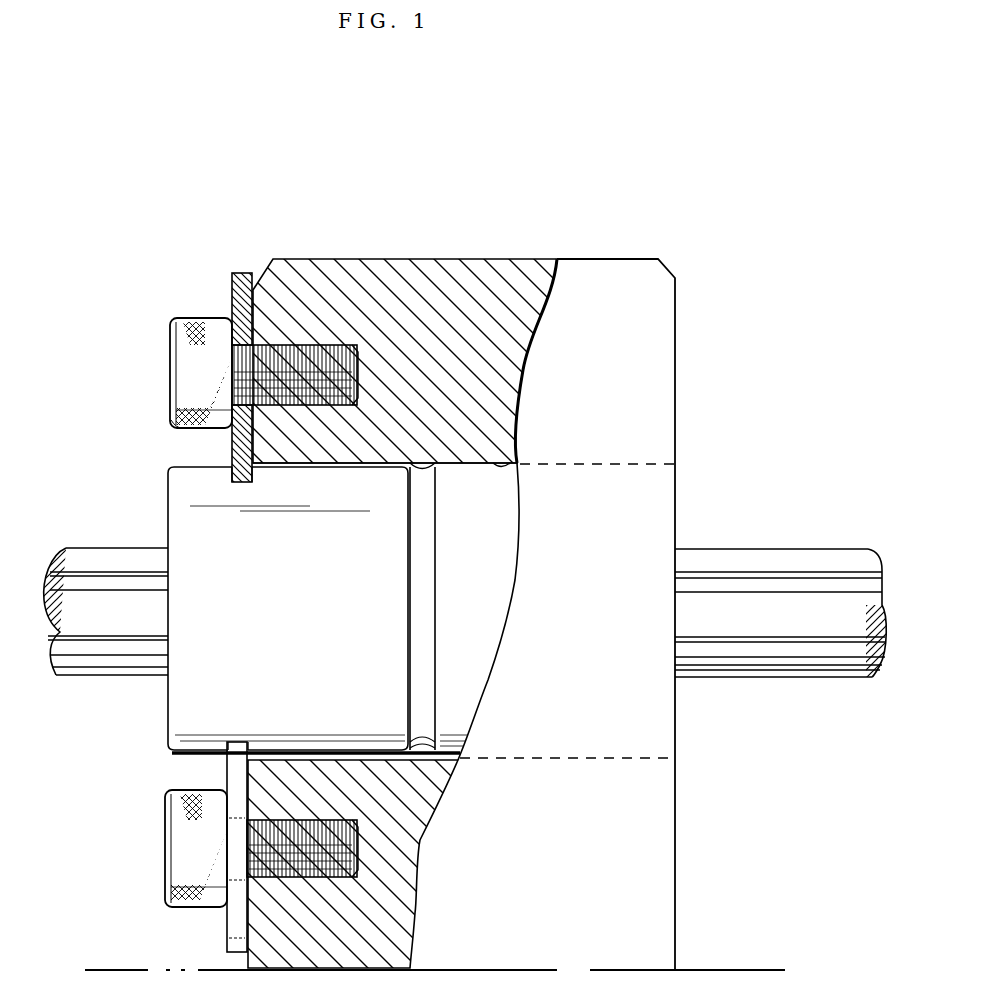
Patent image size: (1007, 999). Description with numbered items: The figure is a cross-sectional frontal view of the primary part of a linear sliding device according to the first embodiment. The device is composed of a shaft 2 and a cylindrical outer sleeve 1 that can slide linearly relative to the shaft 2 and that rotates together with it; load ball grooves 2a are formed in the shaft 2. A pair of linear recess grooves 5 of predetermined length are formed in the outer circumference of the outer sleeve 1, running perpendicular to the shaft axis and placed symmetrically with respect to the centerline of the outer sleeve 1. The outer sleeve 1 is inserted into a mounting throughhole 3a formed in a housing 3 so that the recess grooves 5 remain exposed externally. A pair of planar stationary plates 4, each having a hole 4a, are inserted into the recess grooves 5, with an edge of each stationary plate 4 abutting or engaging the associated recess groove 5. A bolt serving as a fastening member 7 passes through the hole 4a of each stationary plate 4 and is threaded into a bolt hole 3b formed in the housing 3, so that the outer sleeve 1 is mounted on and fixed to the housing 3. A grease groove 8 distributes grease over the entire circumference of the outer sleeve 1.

The outer sleeve 1 is at (170, 745).
The shaft 2 is at (122, 677).
The load ball grooves 2a is at (778, 640).
The housing 3 is at (597, 262).
The mounting throughhole 3a is at (517, 463).
The bolt hole 3b is at (358, 350).
The stationary plate 4 is at (245, 272).
The hole 4a is at (236, 333).
The linear recess groove 5 is at (175, 472).
The fastening member 7 is at (183, 345).
The grease groove 8 is at (450, 773).